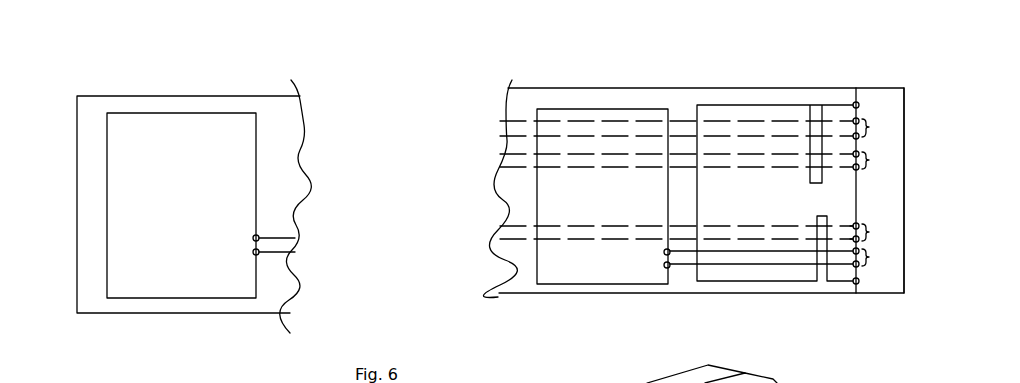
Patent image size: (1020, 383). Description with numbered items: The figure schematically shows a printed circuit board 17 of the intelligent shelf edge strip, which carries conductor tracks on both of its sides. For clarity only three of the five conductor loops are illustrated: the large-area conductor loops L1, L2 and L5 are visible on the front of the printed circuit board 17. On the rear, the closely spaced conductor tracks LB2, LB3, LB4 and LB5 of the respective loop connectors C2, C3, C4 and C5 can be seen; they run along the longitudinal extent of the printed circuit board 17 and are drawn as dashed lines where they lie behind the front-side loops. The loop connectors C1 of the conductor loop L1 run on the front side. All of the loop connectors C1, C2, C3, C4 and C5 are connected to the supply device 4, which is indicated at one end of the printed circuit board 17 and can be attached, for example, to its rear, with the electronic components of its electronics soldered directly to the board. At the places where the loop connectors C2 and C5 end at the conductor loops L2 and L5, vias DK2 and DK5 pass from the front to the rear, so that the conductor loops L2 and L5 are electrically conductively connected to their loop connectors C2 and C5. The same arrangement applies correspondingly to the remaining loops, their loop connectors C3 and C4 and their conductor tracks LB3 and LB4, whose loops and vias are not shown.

The printed circuit board 17 is at (184, 88).
The supply device 4 is at (890, 103).
The conductor loop L5 is at (107, 205).
The conductor loop L2 is at (537, 272).
The conductor loop L1 is at (696, 278).
The loop connector C1 is at (859, 103).
The loop connector C2 is at (663, 252).
The loop connector C3 is at (259, 236).
The loop connector C4 is at (696, 162).
The loop connector C5 is at (696, 129).
The via DK5 is at (247, 243).
The via DK2 is at (655, 256).
The conductor track LB2 is at (797, 253).
The conductor track LB3 is at (748, 227).
The conductor track LB4 is at (594, 167).
The conductor track LB5 is at (758, 154).